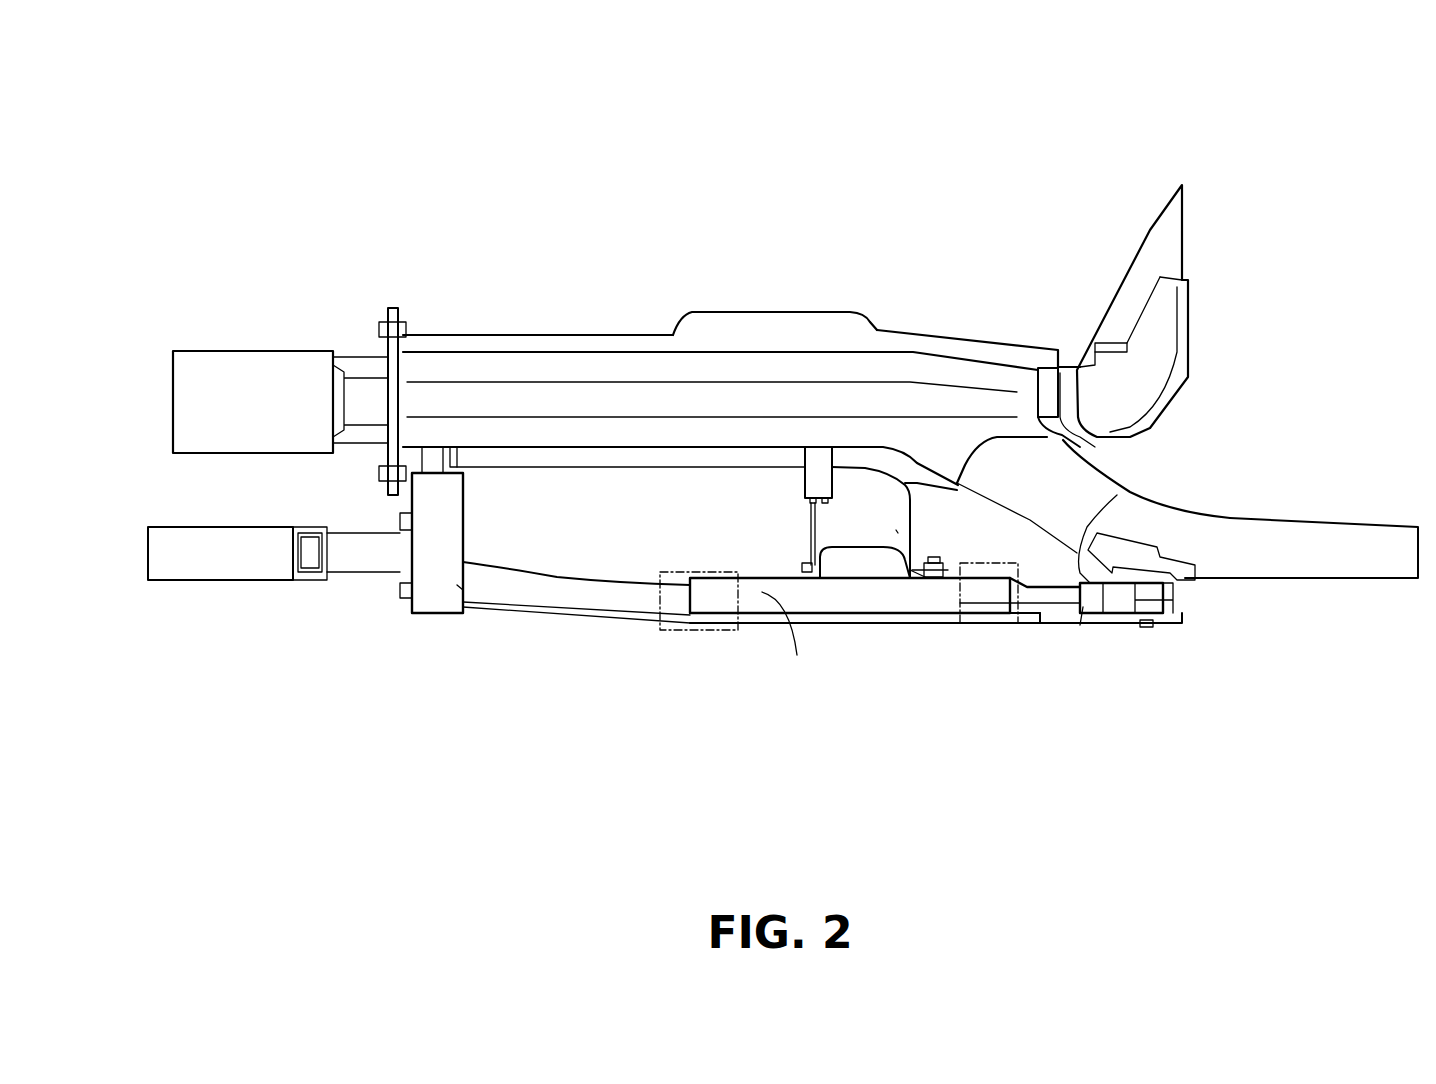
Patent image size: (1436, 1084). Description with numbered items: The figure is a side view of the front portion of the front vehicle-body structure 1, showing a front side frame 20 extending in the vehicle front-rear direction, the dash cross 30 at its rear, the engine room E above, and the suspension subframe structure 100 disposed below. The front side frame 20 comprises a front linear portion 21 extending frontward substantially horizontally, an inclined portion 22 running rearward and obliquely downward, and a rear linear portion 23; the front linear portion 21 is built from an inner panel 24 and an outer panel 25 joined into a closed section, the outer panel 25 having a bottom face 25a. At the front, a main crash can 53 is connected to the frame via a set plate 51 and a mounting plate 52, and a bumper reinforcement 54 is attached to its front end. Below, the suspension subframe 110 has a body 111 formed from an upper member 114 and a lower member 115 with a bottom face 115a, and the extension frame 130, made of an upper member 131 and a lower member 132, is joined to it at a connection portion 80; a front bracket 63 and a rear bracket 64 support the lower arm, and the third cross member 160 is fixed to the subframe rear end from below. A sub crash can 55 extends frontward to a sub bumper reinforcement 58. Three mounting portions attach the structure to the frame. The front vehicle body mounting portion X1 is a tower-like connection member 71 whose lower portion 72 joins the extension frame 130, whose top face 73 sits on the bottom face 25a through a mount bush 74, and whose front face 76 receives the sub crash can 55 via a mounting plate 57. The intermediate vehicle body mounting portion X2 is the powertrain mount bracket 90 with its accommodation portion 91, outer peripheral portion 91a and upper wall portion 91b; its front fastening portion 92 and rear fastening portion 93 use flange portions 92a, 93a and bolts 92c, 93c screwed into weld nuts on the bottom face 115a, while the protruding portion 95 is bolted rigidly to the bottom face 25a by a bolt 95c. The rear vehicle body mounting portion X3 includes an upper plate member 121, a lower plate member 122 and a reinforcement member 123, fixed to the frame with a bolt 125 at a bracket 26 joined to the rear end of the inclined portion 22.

The front vehicle-body structure 1 is at (1232, 118).
The front side frame 20 is at (910, 470).
The front linear portion 21 is at (749, 328).
The inclined portion 22 is at (1147, 508).
The rear linear portion 23 is at (1340, 525).
The inner panel 24 is at (775, 293).
The outer panel 25 is at (656, 360).
The bottom face 25a is at (572, 450).
The bracket 26 is at (1180, 555).
The dash cross 30 is at (1170, 215).
The set plate 51 is at (402, 322).
The mounting plate 52 is at (390, 310).
The main crash can 53 is at (350, 357).
The bumper reinforcement 54 is at (222, 367).
The sub crash can 55 is at (352, 573).
The mounting plate 57 is at (400, 603).
The sub bumper reinforcement 58 is at (222, 567).
The front bracket 63 is at (673, 632).
The rear bracket 64 is at (988, 625).
The connection member 71 is at (443, 622).
The lower portion 72 is at (458, 588).
The top face 73 is at (457, 460).
The mount bush 74 is at (432, 457).
The front face 76 is at (410, 600).
The connection portion 80 is at (598, 649).
The powertrain mount bracket 90 is at (815, 567).
The accommodation portion 91 is at (829, 512).
The outer peripheral portion 91a is at (897, 530).
The upper wall portion 91b is at (938, 472).
The front fastening portion 92 is at (756, 557).
The flange portion 92a is at (700, 563).
The bolt 92c is at (800, 570).
The rear fastening portion 93 is at (961, 611).
The flange portion 93a is at (928, 674).
The bolt 93c is at (980, 570).
The protruding portion 95 is at (772, 506).
The bolt 95c is at (810, 518).
The suspension subframe structure 100 is at (1133, 674).
The suspension subframe 110 is at (836, 628).
The body 111 is at (885, 686).
The upper member 114 is at (800, 660).
The lower member 115 is at (865, 684).
The bottom face 115a is at (890, 624).
The upper plate member 121 is at (1117, 495).
The lower plate member 122 is at (1082, 610).
The reinforcement member 123 is at (1103, 602).
The bolt 125 is at (1145, 628).
The extension frame 130 is at (576, 649).
The upper member 131 is at (606, 600).
The lower member 132 is at (640, 700).
The third cross member 160 is at (1177, 623).
The engine room E is at (1049, 270).
The front vehicle body mounting portion X1 is at (428, 802).
The intermediate vehicle body mounting portion X2 is at (868, 802).
The rear vehicle body mounting portion X3 is at (1128, 802).